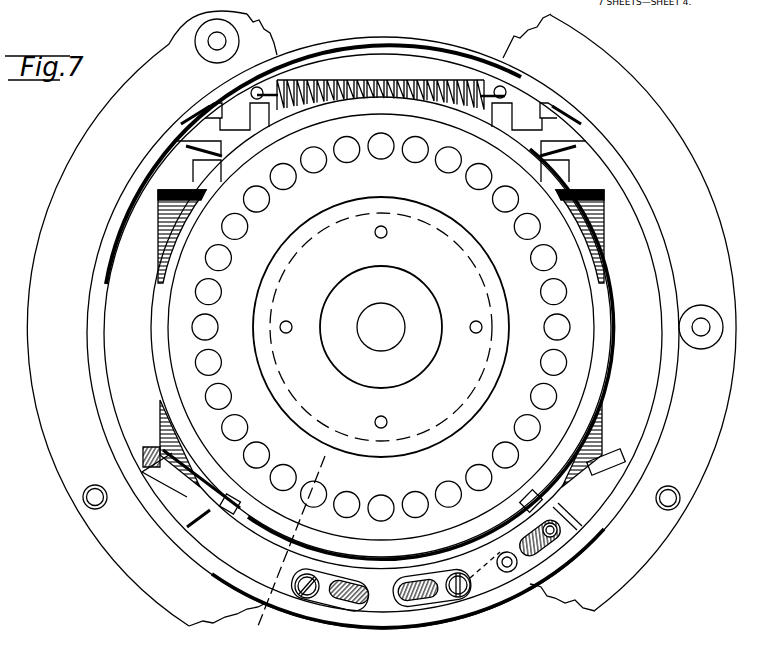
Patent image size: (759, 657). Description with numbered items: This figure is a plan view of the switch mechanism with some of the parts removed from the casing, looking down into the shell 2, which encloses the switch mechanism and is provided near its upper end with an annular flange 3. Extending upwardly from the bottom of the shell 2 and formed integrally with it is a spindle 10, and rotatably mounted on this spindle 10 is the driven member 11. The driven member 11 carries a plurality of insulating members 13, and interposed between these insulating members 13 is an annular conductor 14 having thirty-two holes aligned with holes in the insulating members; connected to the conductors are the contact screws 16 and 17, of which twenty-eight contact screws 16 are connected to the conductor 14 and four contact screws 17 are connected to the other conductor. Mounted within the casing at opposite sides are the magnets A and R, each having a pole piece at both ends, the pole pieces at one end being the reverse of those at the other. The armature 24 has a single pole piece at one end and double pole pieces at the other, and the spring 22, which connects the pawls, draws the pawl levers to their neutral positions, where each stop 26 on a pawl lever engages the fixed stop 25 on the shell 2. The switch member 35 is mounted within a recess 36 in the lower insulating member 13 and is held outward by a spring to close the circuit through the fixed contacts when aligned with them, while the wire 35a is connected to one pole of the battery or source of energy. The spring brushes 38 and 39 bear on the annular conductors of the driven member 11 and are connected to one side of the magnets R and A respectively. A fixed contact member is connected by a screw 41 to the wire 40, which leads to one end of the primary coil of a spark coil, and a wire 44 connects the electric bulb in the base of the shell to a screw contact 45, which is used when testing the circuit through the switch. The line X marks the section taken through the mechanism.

The shell 2 is at (531, 73).
The annular flange 3 is at (622, 72).
The spindle 10 is at (381, 327).
The driven member 11 is at (381, 327).
The insulating members 13 is at (172, 299).
The annular conductor 14 is at (164, 276).
The contact screws 16 is at (311, 168).
The contact screws 17 is at (378, 158).
The spring 22 is at (422, 85).
The armature 24 is at (386, 45).
The fixed stop 25 is at (200, 121).
The stop 26 is at (200, 142).
The switch member 35 is at (283, 553).
The wire 35a is at (545, 548).
The recess 36 is at (508, 572).
The spring brush 38 is at (208, 506).
The spring brush 39 is at (555, 490).
The wire 40 is at (418, 600).
The screw 41 is at (460, 597).
The wire 44 is at (348, 604).
The screw contact 45 is at (307, 598).
The magnet A is at (600, 192).
The magnet R is at (160, 208).
The section line X is at (289, 549).